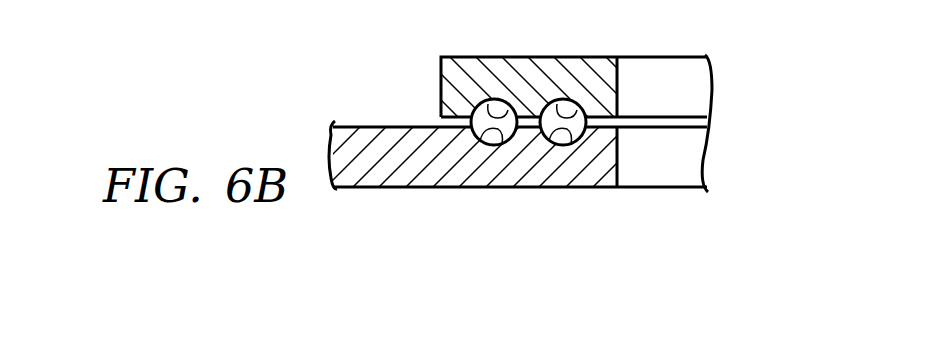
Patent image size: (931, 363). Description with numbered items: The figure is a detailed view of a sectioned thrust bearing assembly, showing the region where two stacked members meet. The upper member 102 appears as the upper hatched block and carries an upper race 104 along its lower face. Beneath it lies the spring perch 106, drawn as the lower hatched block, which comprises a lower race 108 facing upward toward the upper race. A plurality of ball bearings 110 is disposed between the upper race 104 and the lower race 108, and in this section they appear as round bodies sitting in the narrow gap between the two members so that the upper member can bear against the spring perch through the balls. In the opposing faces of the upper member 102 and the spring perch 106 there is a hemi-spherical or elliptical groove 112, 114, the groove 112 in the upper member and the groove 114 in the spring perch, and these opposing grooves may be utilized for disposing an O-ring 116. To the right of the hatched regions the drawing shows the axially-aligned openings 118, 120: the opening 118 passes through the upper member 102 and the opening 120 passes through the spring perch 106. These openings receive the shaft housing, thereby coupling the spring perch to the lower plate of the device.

The upper member 102 is at (441, 83).
The upper race 104 is at (590, 102).
The spring perch 106 is at (375, 182).
The lower race 108 is at (557, 142).
The ball bearings 110 is at (582, 143).
The groove 112 is at (519, 99).
The groove 114 is at (480, 138).
The O-ring 116 is at (478, 99).
The opening 118 is at (662, 89).
The opening 120 is at (662, 157).